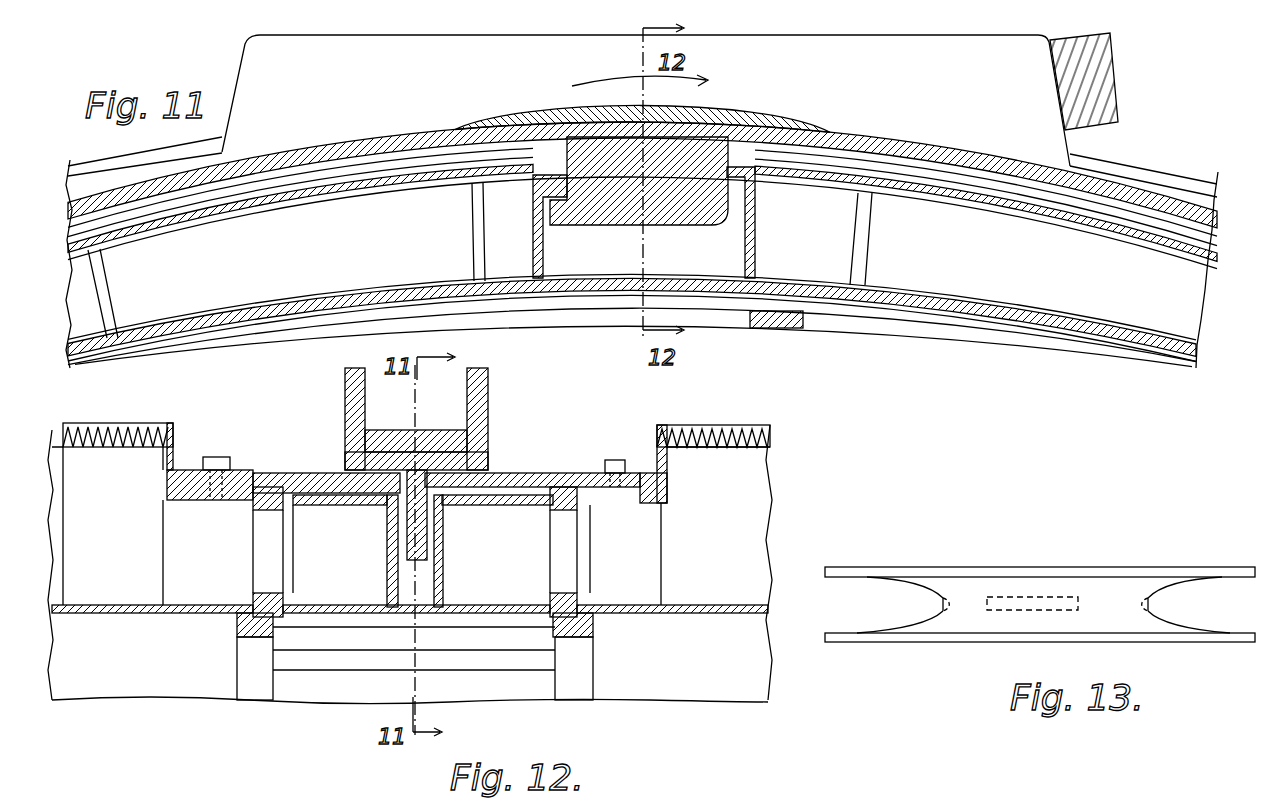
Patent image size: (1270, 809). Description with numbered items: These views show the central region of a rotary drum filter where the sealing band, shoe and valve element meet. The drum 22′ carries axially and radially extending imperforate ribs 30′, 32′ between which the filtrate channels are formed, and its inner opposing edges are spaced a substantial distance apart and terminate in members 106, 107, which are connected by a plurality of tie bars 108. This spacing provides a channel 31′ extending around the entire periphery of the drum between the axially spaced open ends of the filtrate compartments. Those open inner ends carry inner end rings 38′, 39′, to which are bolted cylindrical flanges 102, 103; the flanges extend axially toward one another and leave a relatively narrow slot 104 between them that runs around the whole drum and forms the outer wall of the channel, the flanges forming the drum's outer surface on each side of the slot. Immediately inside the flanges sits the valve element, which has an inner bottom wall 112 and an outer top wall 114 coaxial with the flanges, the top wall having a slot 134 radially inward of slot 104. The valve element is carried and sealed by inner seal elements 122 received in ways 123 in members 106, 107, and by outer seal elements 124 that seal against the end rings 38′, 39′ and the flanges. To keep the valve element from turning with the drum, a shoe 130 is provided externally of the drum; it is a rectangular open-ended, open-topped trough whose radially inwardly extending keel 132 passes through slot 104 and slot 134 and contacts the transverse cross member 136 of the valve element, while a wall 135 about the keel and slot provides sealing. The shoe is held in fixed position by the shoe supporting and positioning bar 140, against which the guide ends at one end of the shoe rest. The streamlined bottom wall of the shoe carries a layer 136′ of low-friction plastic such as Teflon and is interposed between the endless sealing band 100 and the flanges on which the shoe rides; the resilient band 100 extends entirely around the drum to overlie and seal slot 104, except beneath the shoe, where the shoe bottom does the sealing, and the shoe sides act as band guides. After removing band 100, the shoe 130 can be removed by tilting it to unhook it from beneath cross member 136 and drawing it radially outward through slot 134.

In FIG. 11, the shoe 130 is at (352, 78).
In FIG. 12, the shoe 130 is at (502, 414).
In FIG. 13, the shoe 130 is at (994, 566).
In FIG. 11, the layer of low friction organic plastic material 136′ is at (507, 127).
In FIG. 12, the layer of low friction organic plastic material 136′ is at (372, 460).
In FIG. 11, the endless sealing band 100 is at (840, 128).
In FIG. 12, the endless sealing band 100 is at (425, 440).
In FIG. 11, the shoe supporting and positioning bar 140 is at (1112, 72).
In FIG. 11, the transverse cross member 136 is at (545, 188).
In FIG. 11, the outer top wall 114 is at (1020, 208).
In FIG. 12, the outer top wall 114 is at (352, 505).
In FIG. 11, the channel 31′ is at (283, 256).
In FIG. 12, the channel 31′ is at (405, 628).
In FIG. 11, the ribs 32′ is at (104, 300).
In FIG. 12, the ribs 32′ is at (747, 533).
In FIG. 11, the keel 132 is at (640, 205).
In FIG. 12, the keel 132 is at (434, 560).
In FIG. 13, the keel 132 is at (1020, 612).
In FIG. 11, the slot 134 is at (737, 175).
In FIG. 12, the slot 134 is at (442, 505).
In FIG. 11, the wall 135 is at (756, 246).
In FIG. 12, the wall 135 is at (387, 560).
In FIG. 11, the inner seal elements 122 is at (1003, 310).
In FIG. 12, the inner seal elements 122 is at (260, 600).
In FIG. 11, the inner bottom wall 112 is at (1100, 340).
In FIG. 12, the inner bottom wall 112 is at (333, 614).
In FIG. 11, the member 107 is at (897, 325).
In FIG. 12, the member 107 is at (595, 681).
In FIG. 11, the tie bars 108 is at (780, 330).
In FIG. 12, the tie bars 108 is at (470, 664).
In FIG. 12, the ribs 30′ is at (70, 562).
In FIG. 12, the cylindrical flange 102 is at (253, 470).
In FIG. 12, the inner end ring 38′ is at (178, 488).
In FIG. 12, the slot 104 is at (490, 478).
In FIG. 12, the cylindrical flange 103 is at (580, 473).
In FIG. 12, the inner end ring 39′ is at (658, 497).
In FIG. 12, the outer seal elements 124 is at (258, 510).
In FIG. 12, the drum 22′ is at (130, 614).
In FIG. 12, the ways 123 is at (240, 628).
In FIG. 12, the member 106 is at (240, 665).